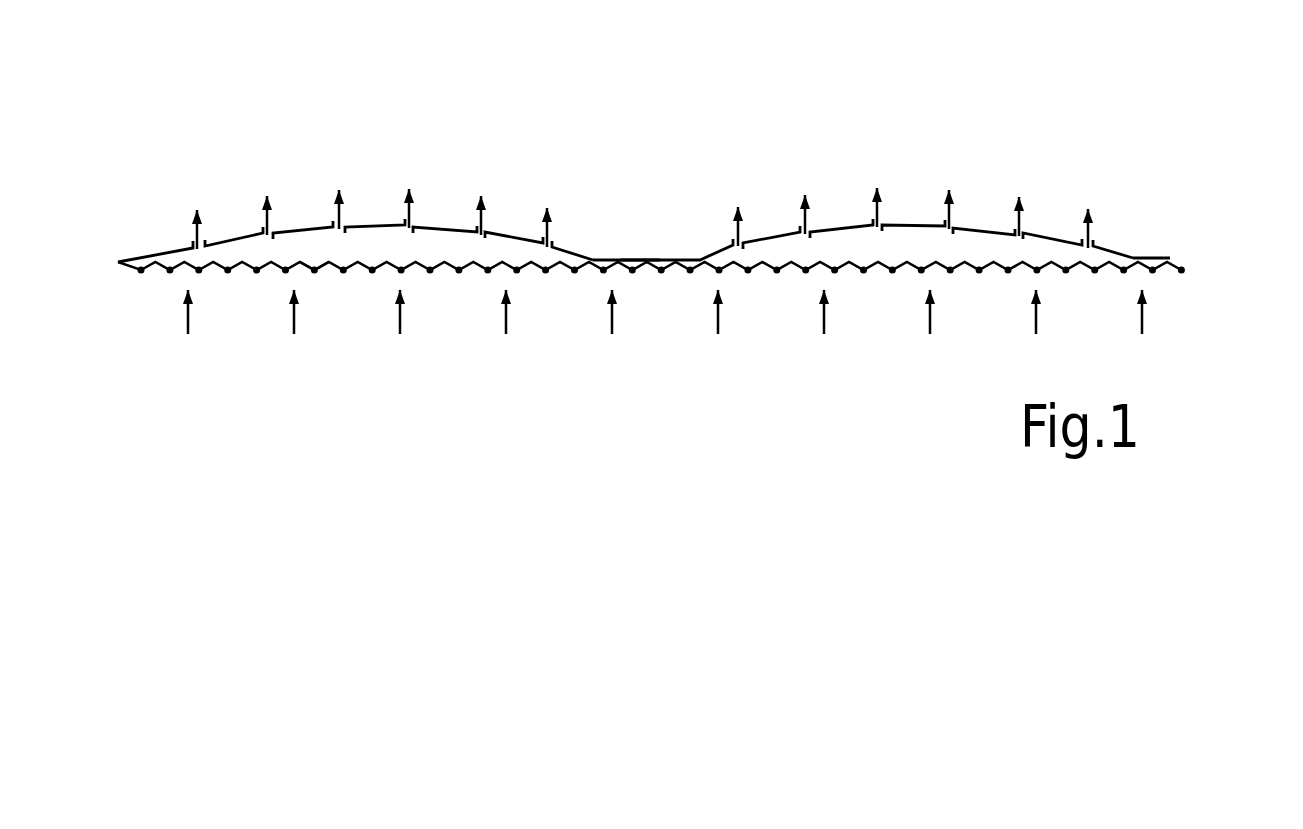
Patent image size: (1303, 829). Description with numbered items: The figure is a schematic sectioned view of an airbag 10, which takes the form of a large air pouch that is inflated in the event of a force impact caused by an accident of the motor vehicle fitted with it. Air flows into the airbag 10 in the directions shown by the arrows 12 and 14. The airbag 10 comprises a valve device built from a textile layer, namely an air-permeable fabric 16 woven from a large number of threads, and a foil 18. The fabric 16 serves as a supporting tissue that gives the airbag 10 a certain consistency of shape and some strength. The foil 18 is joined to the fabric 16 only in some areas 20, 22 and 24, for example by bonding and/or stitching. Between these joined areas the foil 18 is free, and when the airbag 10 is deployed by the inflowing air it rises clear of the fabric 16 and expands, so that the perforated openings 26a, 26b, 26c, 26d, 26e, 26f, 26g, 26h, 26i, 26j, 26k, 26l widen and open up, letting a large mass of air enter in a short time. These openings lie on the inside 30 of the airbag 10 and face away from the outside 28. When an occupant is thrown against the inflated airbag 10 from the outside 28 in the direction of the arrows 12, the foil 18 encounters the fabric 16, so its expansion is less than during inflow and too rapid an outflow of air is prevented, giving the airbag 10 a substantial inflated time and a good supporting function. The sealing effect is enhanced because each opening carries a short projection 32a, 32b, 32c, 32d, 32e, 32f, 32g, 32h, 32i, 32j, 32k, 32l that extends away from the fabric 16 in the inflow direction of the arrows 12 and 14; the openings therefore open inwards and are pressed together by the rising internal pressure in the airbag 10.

The airbag 10 is at (963, 384).
The arrows 12 is at (1158, 312).
The arrows 14 is at (255, 107).
The fabric 16 is at (1205, 270).
The foil 18 is at (707, 260).
The area 20 is at (122, 247).
The area 22 is at (641, 255).
The area 24 is at (1173, 223).
The opening 26a is at (209, 237).
The opening 26b is at (278, 225).
The opening 26c is at (350, 221).
The opening 26d is at (420, 222).
The opening 26e is at (495, 226).
The opening 26f is at (560, 243).
The opening 26g is at (747, 238).
The opening 26h is at (817, 225).
The opening 26i is at (888, 221).
The opening 26j is at (960, 222).
The opening 26k is at (1033, 218).
The opening 26l is at (1100, 237).
The outside 28 is at (150, 274).
The inside 30 is at (314, 269).
The short projection 32a is at (190, 245).
The short projection 32b is at (260, 227).
The short projection 32c is at (332, 222).
The short projection 32d is at (403, 220).
The short projection 32e is at (470, 225).
The short projection 32f is at (541, 237).
The short projection 32g is at (728, 241).
The short projection 32h is at (800, 227).
The short projection 32i is at (870, 220).
The short projection 32j is at (942, 220).
The short projection 32k is at (1008, 223).
The short projection 32l is at (1078, 235).